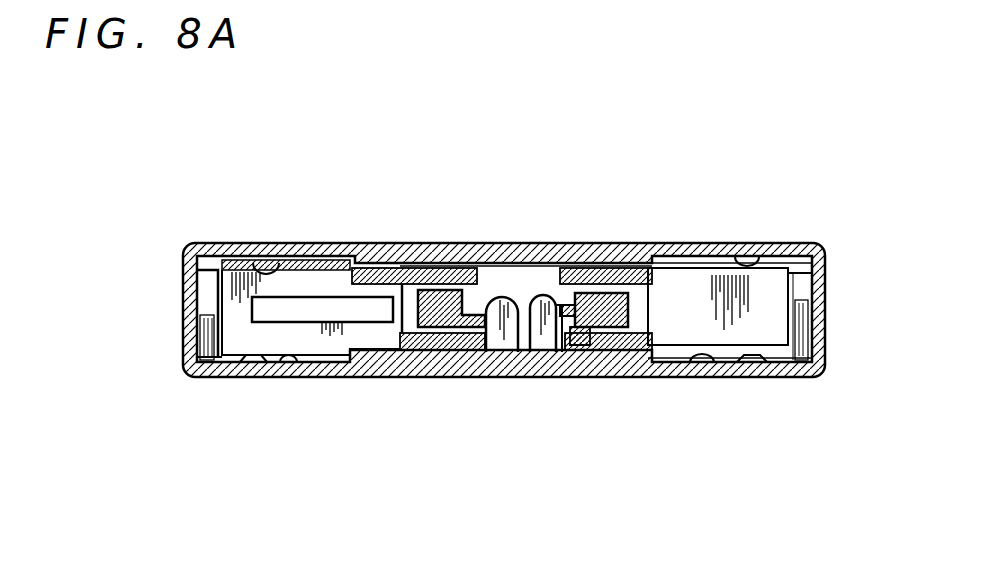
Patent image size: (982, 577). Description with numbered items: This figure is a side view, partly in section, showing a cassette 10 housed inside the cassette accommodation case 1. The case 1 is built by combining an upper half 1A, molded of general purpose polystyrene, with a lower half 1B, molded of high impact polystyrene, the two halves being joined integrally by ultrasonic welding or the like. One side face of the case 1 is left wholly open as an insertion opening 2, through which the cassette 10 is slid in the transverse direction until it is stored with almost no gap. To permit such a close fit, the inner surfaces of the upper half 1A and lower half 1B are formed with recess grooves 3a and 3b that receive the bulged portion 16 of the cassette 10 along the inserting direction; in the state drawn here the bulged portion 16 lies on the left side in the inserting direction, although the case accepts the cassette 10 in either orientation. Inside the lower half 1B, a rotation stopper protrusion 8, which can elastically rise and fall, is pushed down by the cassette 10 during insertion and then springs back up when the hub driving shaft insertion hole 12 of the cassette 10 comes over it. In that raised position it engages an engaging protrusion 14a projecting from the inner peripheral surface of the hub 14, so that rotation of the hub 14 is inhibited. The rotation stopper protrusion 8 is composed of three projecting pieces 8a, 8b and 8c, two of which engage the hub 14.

The cassette accommodation case 1 is at (358, 243).
The upper half 1A is at (398, 243).
The lower half 1B is at (405, 377).
The insertion opening 2 is at (667, 310).
The recess groove 3a is at (262, 268).
The recess groove 3b is at (287, 357).
The rotation stopper protrusion 8 is at (503, 238).
The projecting piece 8a is at (542, 295).
The projecting piece 8b is at (510, 297).
The projecting piece 8c is at (477, 282).
The cassette 10 is at (745, 258).
The hub driving shaft insertion hole 12 is at (560, 268).
The hub 14 is at (600, 328).
The engaging protrusion 14a is at (558, 355).
The bulged portion 16 is at (316, 260).